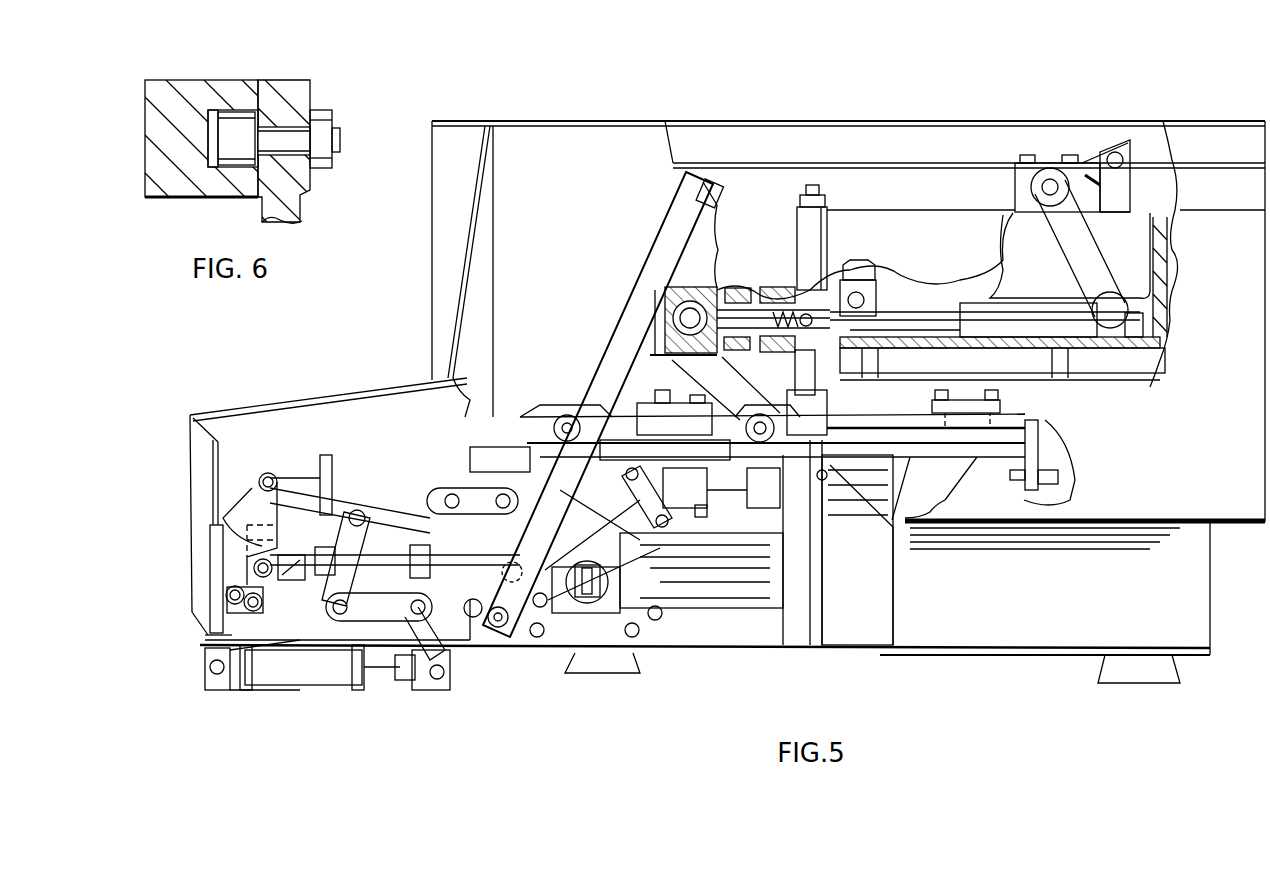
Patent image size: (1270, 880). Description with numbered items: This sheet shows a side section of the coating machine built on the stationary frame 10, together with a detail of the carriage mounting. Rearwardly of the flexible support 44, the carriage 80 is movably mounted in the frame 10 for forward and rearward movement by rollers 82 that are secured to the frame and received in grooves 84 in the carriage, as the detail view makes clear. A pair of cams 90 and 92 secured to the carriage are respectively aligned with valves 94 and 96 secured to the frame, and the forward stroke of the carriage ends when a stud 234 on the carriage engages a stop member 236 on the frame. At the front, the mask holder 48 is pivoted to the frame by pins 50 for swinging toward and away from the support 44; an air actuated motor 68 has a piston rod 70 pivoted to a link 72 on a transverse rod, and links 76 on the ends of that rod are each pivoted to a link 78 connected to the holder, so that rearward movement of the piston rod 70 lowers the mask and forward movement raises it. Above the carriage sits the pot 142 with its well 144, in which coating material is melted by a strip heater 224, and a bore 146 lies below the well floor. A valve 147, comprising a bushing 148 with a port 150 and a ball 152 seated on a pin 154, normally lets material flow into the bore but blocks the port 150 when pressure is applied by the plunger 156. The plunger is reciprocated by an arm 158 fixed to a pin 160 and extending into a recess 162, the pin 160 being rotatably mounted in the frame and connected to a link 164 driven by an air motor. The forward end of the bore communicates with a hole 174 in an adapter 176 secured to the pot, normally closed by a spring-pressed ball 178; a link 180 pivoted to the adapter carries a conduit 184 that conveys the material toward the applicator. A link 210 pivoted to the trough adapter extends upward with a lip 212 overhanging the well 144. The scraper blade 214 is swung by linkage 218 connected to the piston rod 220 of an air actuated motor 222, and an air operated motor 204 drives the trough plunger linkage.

In FIG. 6, the frame 10 is at (300, 200).
In FIG. 6, the carriage 80 is at (152, 124).
In FIG. 5, the carriage 80 is at (885, 424).
In FIG. 6, the rollers 82 is at (240, 128).
In FIG. 6, the grooves 84 is at (213, 112).
In FIG. 5, the support 44 is at (236, 506).
In FIG. 5, the mask holder 48 is at (330, 515).
In FIG. 5, the pins 50 is at (450, 515).
In FIG. 5, the air actuated motor 68 is at (318, 685).
In FIG. 5, the piston rod 70 is at (395, 680).
In FIG. 5, the link 72 is at (450, 672).
In FIG. 5, the links 76 is at (388, 615).
In FIG. 5, the link 78 is at (350, 512).
In FIG. 5, the cam 90 is at (685, 400).
In FIG. 5, the cam 92 is at (960, 410).
In FIG. 5, the valve 94 is at (705, 518).
In FIG. 5, the valve 96 is at (780, 484).
In FIG. 5, the pot 142 is at (1172, 274).
In FIG. 5, the well 144 is at (915, 305).
In FIG. 5, the bore 146 is at (925, 320).
In FIG. 5, the valve 147 is at (846, 290).
In FIG. 5, the bushing 148 is at (876, 300).
In FIG. 5, the port 150 is at (858, 298).
In FIG. 5, the ball 152 is at (858, 278).
In FIG. 5, the pin 154 is at (830, 360).
In FIG. 5, the plunger 156 is at (1008, 320).
In FIG. 5, the arm 158 is at (1088, 238).
In FIG. 5, the pin 160 is at (1053, 182).
In FIG. 5, the recess 162 is at (1160, 340).
In FIG. 5, the link 164 is at (1092, 160).
In FIG. 5, the hole 174 is at (752, 312).
In FIG. 5, the adapter 176 is at (692, 300).
In FIG. 5, the spring-pressed ball 178 is at (800, 338).
In FIG. 5, the link 180 is at (705, 396).
In FIG. 5, the conduit 184 is at (712, 240).
In FIG. 5, the air operated motor 204 is at (590, 572).
In FIG. 5, the link 210 is at (664, 238).
In FIG. 5, the lip 212 is at (716, 185).
In FIG. 5, the scraper blade 214 is at (440, 520).
In FIG. 5, the linkage 218 is at (500, 470).
In FIG. 5, the piston rod 220 is at (450, 565).
In FIG. 5, the air actuated motor 222 is at (335, 580).
In FIG. 5, the strip heater 224 is at (1162, 365).
In FIG. 5, the stud 234 is at (1005, 498).
In FIG. 5, the stop member 236 is at (828, 476).